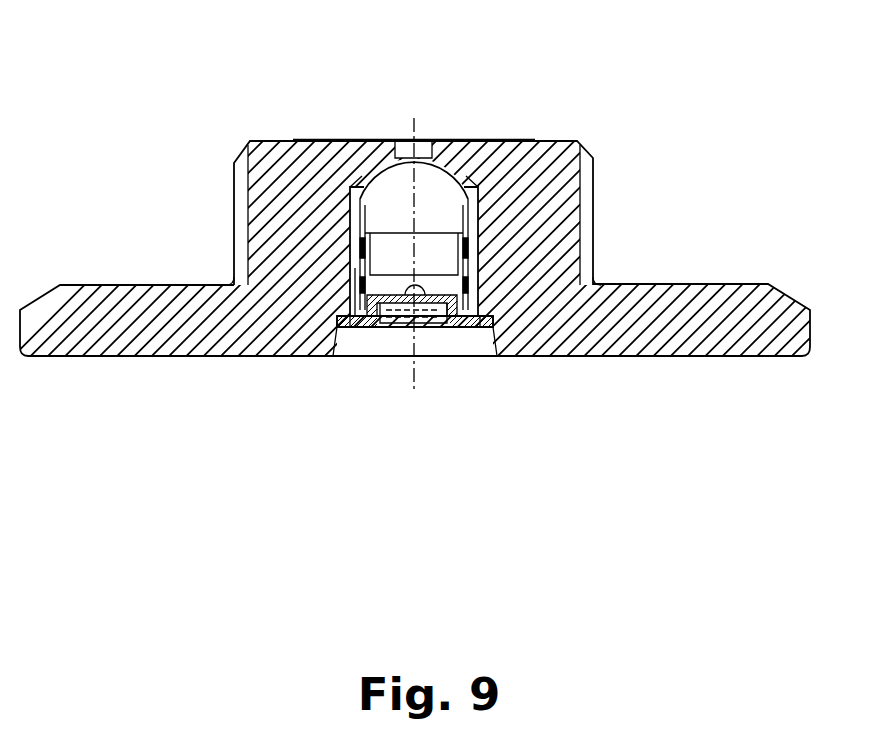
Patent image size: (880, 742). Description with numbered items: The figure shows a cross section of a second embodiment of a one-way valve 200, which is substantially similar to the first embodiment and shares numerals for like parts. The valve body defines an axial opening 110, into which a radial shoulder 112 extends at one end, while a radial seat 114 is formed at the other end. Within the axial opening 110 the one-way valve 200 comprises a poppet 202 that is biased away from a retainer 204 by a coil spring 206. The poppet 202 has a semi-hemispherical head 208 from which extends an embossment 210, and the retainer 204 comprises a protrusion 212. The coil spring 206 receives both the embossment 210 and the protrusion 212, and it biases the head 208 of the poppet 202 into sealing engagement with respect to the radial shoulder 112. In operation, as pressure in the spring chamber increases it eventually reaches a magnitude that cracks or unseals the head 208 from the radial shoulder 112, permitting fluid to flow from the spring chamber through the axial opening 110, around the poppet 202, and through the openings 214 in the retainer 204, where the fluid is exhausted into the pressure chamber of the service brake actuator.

The one-way valve 200 is at (665, 42).
The axial opening 110 is at (418, 139).
The radial shoulder 112 is at (455, 138).
The radial seat 114 is at (493, 320).
The poppet 202 is at (482, 193).
The retainer 204 is at (470, 328).
The coil spring 206 is at (340, 275).
The semi-hemispherical head 208 is at (367, 182).
The embossment 210 is at (376, 327).
The protrusion 212 is at (437, 327).
The openings 214 is at (483, 328).